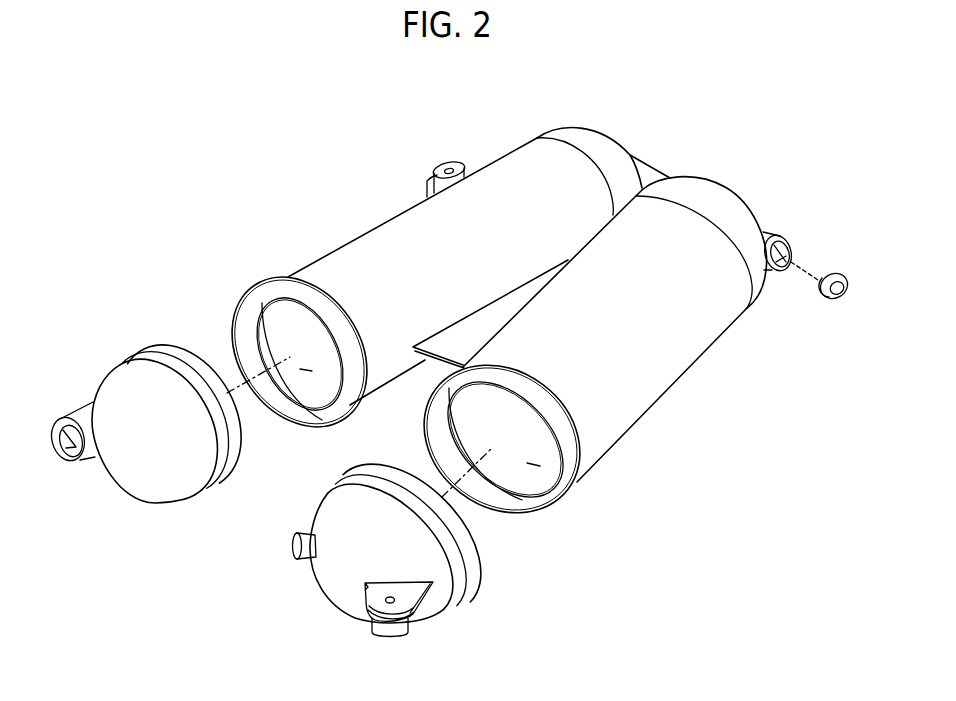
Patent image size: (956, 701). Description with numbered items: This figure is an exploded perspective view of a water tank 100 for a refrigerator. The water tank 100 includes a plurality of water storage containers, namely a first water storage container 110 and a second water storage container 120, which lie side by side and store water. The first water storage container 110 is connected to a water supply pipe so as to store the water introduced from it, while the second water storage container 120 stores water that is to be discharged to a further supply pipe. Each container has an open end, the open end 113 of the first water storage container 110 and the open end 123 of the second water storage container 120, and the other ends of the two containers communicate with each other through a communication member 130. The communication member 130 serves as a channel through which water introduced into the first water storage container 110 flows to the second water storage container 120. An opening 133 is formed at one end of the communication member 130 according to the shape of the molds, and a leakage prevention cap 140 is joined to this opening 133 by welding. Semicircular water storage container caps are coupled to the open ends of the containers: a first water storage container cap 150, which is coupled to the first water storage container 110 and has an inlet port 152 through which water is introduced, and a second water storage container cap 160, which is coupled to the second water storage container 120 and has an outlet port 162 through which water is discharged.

The water tank 100 is at (251, 201).
The first water storage container 110 is at (650, 404).
The open end 113 is at (533, 467).
The second water storage container 120 is at (388, 222).
The open end 123 is at (306, 372).
The communication member 130 is at (652, 175).
The opening 133 is at (774, 268).
The leakage prevention cap 140 is at (835, 298).
The first water storage container cap 150 is at (330, 583).
The inlet port 152 is at (293, 545).
The second water storage container cap 160 is at (157, 482).
The outlet port 162 is at (63, 463).